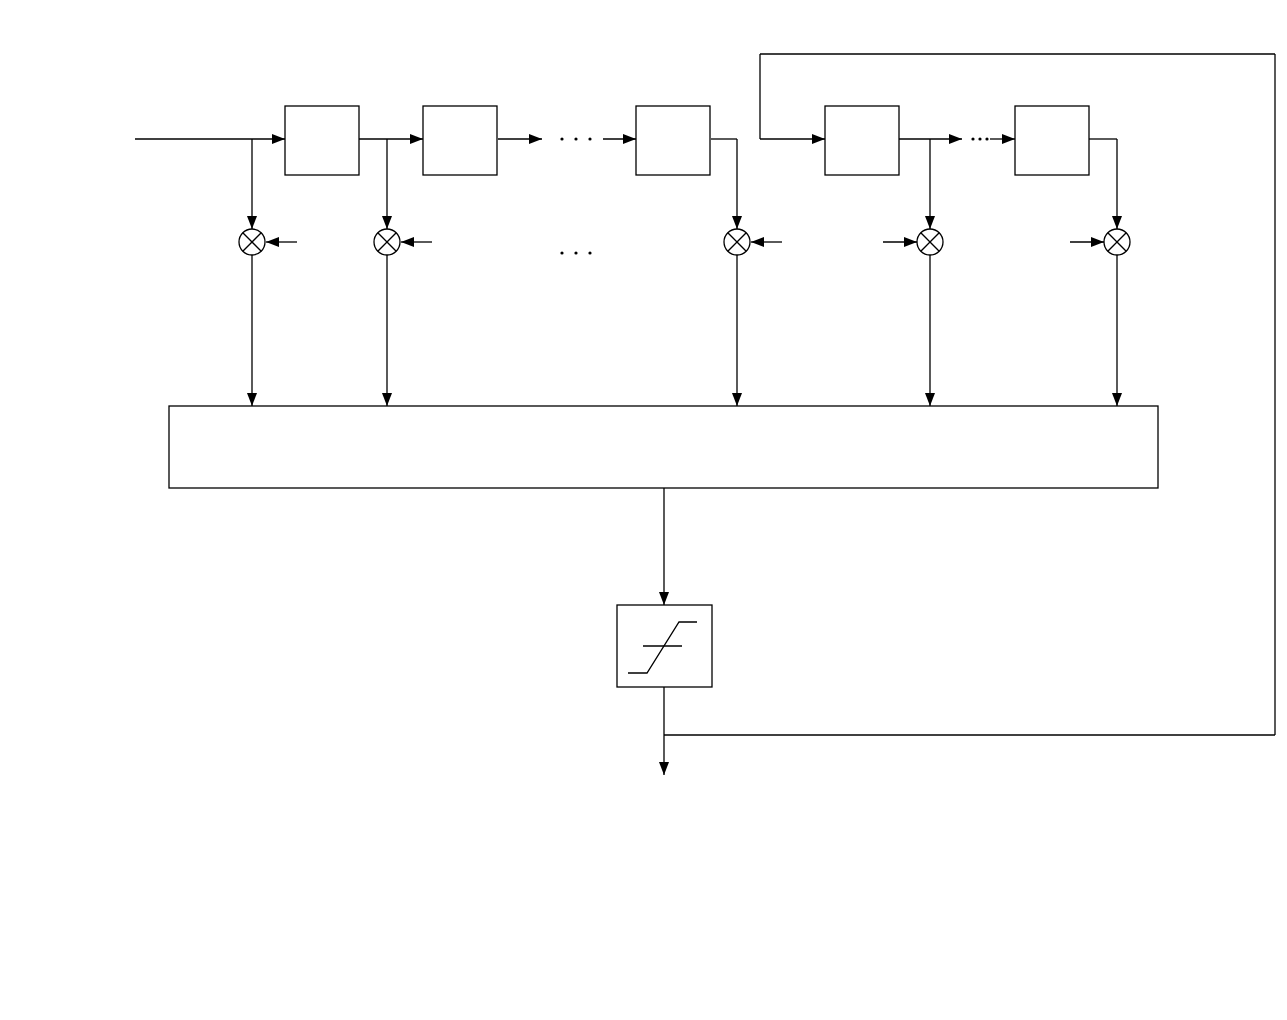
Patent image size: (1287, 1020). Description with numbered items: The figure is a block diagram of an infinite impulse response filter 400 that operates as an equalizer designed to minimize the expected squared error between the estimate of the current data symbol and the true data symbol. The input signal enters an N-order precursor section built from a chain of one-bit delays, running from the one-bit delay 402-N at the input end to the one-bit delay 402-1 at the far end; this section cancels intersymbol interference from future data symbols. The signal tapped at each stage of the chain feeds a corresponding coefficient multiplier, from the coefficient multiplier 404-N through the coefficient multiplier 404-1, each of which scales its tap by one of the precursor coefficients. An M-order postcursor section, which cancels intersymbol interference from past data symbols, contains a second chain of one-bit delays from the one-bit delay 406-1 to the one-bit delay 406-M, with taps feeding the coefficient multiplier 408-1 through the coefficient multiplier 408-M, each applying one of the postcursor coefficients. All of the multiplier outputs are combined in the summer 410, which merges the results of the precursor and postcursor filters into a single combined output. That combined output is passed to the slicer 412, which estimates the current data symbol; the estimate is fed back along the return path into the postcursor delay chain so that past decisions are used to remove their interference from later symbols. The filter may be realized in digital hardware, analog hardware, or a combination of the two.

The IIR filter 400 is at (702, 474).
The one-bit delay 402-N is at (320, 106).
The one-bit delay 402-1 is at (674, 106).
The coefficient multiplier 404-N is at (241, 251).
The coefficient multiplier 404-1 is at (727, 251).
The one-bit delay 406-1 is at (823, 165).
The one-bit delay 406-M is at (1013, 165).
The coefficient multiplier 408-1 is at (942, 250).
The coefficient multiplier 408-M is at (1129, 250).
The summer 410 is at (320, 490).
The slicer 412 is at (617, 645).